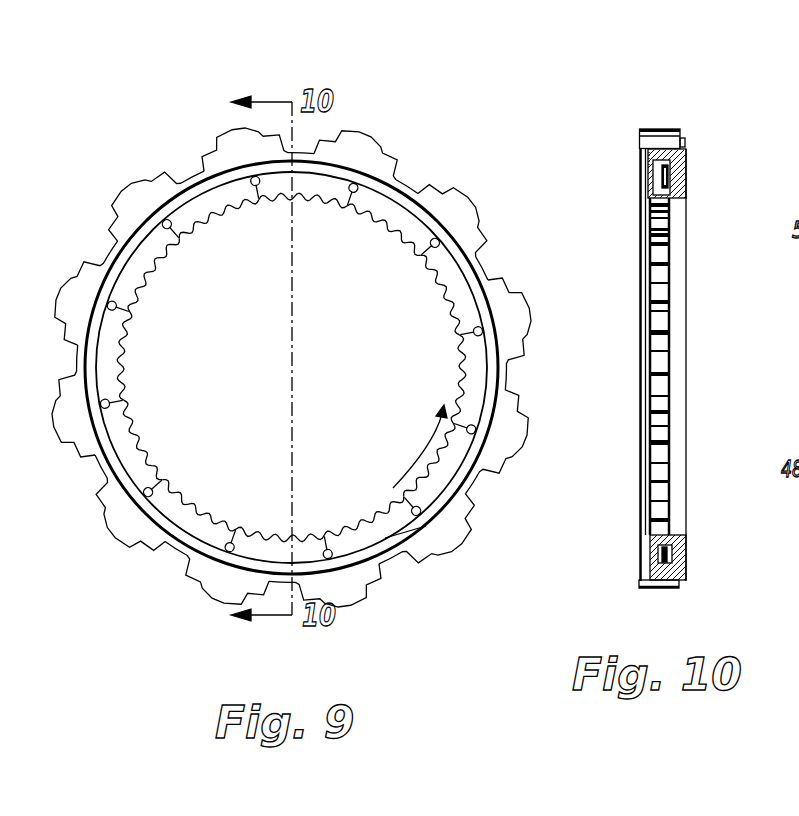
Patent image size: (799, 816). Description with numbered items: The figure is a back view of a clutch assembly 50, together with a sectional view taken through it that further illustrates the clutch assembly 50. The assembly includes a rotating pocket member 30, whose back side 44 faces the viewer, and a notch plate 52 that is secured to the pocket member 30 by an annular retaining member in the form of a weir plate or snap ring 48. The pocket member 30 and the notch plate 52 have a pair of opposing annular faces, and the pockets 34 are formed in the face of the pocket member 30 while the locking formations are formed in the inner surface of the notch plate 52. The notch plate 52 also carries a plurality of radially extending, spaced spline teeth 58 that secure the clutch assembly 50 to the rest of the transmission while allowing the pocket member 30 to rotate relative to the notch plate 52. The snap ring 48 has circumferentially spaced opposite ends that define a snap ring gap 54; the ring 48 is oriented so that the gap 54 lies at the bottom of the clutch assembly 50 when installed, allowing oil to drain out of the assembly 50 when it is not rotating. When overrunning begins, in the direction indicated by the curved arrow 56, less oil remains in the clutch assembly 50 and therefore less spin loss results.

In FIG. 9, the pocket member 30 is at (327, 214).
In FIG. 10, the pocket member 30 is at (677, 192).
In FIG. 10, the pockets 34 is at (674, 171).
In FIG. 9, the back side 44 is at (258, 189).
In FIG. 9, the snap ring 48 is at (405, 176).
In FIG. 10, the snap ring 48 is at (634, 165).
In FIG. 9, the clutch assembly 50 is at (455, 93).
In FIG. 10, the clutch assembly 50 is at (699, 70).
In FIG. 10, the notch plate 52 is at (696, 180).
In FIG. 9, the snap ring gap 54 is at (423, 540).
In FIG. 9, the curved arrow 56 is at (425, 446).
In FIG. 9, the spline teeth 58 is at (134, 195).
In FIG. 10, the spline teeth 58 is at (658, 129).